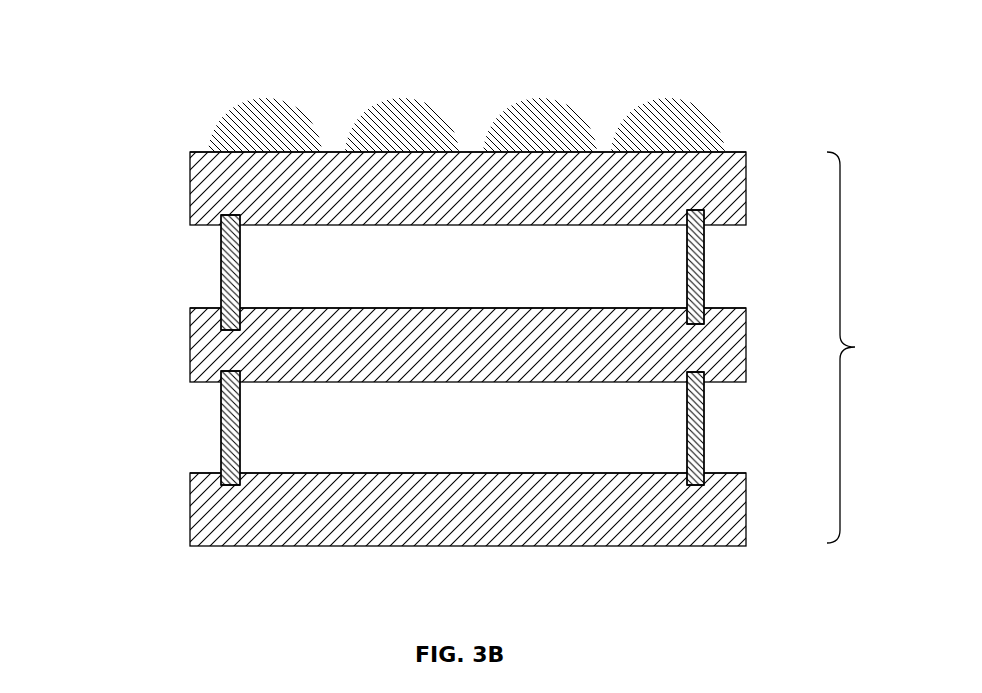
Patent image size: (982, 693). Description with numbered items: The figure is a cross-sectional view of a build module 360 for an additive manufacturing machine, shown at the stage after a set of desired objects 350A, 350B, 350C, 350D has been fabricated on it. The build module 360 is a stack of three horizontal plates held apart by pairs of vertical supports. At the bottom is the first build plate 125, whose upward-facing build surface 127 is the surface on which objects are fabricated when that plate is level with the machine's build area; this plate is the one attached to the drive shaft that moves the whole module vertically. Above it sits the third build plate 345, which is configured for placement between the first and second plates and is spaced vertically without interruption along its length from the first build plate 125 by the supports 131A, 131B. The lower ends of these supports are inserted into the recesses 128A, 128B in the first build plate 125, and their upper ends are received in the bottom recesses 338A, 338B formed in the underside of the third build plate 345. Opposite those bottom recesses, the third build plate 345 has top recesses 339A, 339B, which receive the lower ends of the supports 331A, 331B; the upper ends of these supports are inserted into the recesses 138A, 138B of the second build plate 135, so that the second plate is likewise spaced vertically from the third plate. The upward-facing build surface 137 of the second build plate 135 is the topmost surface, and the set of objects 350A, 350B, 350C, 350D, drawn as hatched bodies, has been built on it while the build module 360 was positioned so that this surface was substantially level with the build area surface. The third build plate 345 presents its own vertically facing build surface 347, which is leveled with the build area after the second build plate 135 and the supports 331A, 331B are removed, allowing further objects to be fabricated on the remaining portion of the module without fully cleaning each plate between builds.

The second build plate 135 is at (172, 164).
The build surface 137 is at (193, 150).
The third build plate 345 is at (172, 322).
The build surface 347 is at (393, 306).
The first build plate 125 is at (172, 503).
The build surface 127 is at (253, 474).
The support 331A is at (222, 278).
The support 331B is at (702, 253).
The support 131A is at (221, 445).
The support 131B is at (702, 427).
The recess 138A is at (229, 216).
The recess 138B is at (699, 211).
The top recess 339A is at (243, 333).
The top recess 339B is at (688, 326).
The bottom recess 338A is at (230, 372).
The bottom recess 338B is at (688, 372).
The recess 128A is at (235, 488).
The recess 128B is at (696, 487).
The desired object 350A is at (270, 113).
The desired object 350B is at (418, 118).
The desired object 350C is at (550, 117).
The desired object 350D is at (687, 118).
The build module 360 is at (867, 347).